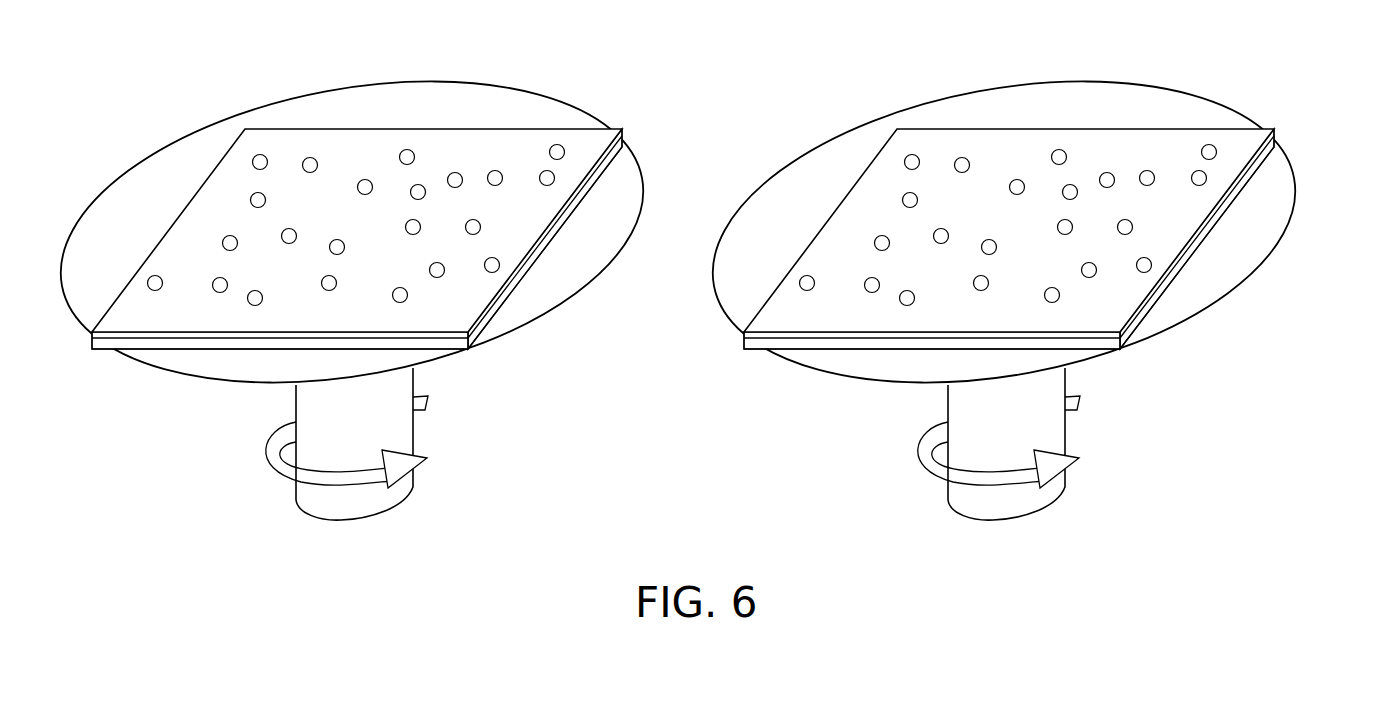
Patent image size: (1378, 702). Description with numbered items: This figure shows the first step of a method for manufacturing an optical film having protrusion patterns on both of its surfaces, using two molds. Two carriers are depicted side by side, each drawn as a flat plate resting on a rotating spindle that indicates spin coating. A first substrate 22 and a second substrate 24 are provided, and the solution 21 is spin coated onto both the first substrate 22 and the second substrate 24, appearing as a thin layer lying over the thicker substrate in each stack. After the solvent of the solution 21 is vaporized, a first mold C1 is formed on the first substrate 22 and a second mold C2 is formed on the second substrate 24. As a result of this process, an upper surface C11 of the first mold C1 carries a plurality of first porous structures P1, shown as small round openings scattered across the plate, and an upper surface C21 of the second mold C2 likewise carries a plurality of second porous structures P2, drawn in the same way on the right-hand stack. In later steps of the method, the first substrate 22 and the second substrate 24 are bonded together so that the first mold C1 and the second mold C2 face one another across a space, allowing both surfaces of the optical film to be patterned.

The first porous structures P1 is at (310, 158).
The second porous structures P2 is at (962, 158).
The first mold C1 is at (540, 242).
The upper surface of the first mold C11 is at (575, 130).
The second mold C2 is at (1187, 247).
The upper surface of the second mold C21 is at (1230, 127).
The solution 21 is at (612, 168).
The first substrate 22 is at (582, 208).
The second substrate 24 is at (1238, 190).